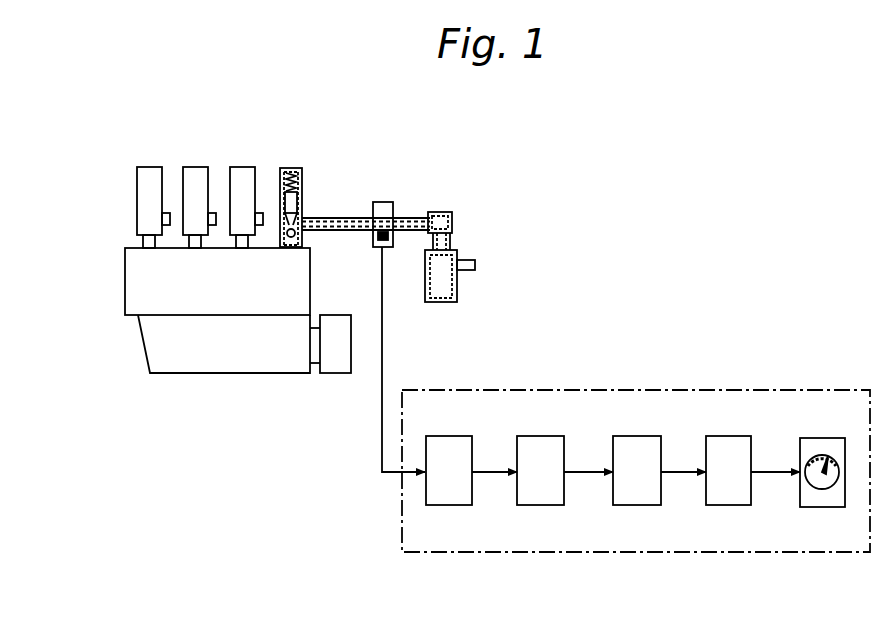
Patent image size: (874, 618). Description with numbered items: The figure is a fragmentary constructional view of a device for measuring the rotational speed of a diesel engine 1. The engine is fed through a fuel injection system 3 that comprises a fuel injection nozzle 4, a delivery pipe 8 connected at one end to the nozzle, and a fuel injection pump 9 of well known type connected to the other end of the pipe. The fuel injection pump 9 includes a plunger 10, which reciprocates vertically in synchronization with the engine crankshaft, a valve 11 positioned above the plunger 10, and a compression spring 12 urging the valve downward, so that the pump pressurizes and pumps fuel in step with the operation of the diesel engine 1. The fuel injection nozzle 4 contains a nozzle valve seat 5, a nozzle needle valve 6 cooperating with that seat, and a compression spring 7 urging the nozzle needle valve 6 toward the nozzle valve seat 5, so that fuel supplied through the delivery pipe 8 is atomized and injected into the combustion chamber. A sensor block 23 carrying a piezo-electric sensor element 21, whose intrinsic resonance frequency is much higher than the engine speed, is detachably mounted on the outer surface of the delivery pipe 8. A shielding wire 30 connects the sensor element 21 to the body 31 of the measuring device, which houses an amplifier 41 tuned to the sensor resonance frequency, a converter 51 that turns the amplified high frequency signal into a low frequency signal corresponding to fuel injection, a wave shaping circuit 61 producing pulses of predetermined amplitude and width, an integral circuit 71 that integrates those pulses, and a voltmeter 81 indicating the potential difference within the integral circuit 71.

The diesel engine 1 is at (225, 362).
The fuel injection system 3 is at (413, 128).
The fuel injection nozzle 4 is at (302, 170).
The nozzle valve seat 5 is at (300, 232).
The nozzle needle valve 6 is at (295, 203).
The compression spring 7 is at (300, 182).
The delivery pipe 8 is at (352, 218).
The fuel injection pump 9 is at (457, 252).
The plunger 10 is at (445, 281).
The valve 11 is at (452, 226).
The compression spring 12 is at (452, 215).
The sensor element 21 is at (380, 240).
The sensor block 23 is at (393, 207).
The shielding wire 30 is at (383, 352).
The body of the rotational speed measuring device 31 is at (636, 434).
The amplifier 41 is at (455, 506).
The converter 51 is at (543, 506).
The wave shaping circuit 61 is at (639, 506).
The integral circuit 71 is at (730, 506).
The voltmeter 81 is at (823, 508).